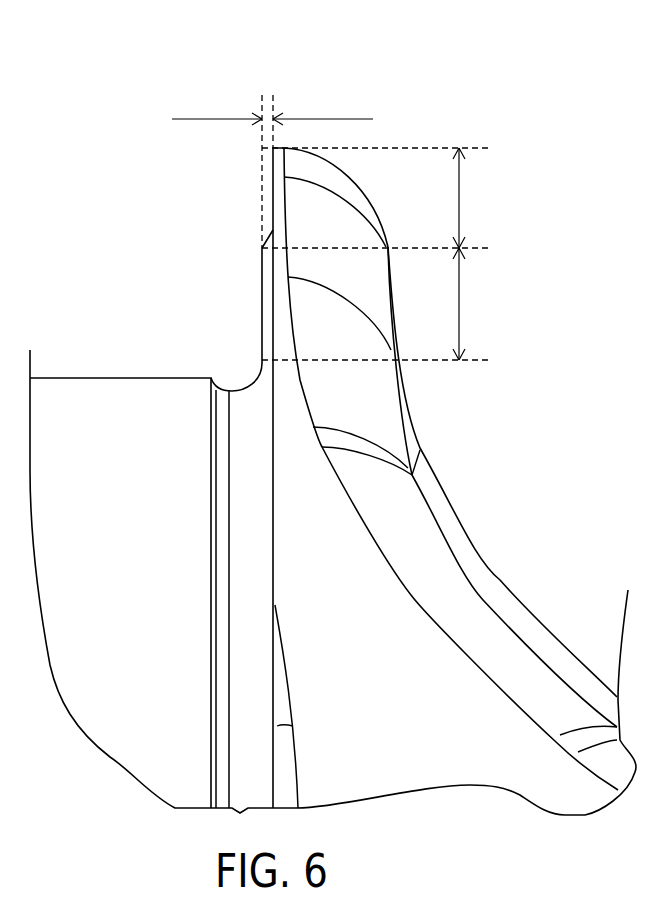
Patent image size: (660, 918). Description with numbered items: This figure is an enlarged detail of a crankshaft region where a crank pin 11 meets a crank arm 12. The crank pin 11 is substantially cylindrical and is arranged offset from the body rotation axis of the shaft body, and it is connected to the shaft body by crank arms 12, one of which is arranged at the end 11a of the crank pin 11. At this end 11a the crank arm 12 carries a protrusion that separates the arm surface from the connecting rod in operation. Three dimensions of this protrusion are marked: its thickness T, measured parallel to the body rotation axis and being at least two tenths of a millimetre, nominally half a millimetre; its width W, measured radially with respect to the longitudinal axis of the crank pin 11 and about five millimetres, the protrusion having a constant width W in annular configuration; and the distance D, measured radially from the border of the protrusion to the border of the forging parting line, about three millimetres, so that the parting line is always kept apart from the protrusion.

The crank pin 11 is at (135, 380).
The end of the crank pin 11a is at (210, 358).
The crank arm 12 is at (433, 553).
The thickness of the protrusion T is at (266, 120).
The distance between the parting line and the protrusion D is at (376, 198).
The width of the protrusion W is at (376, 304).